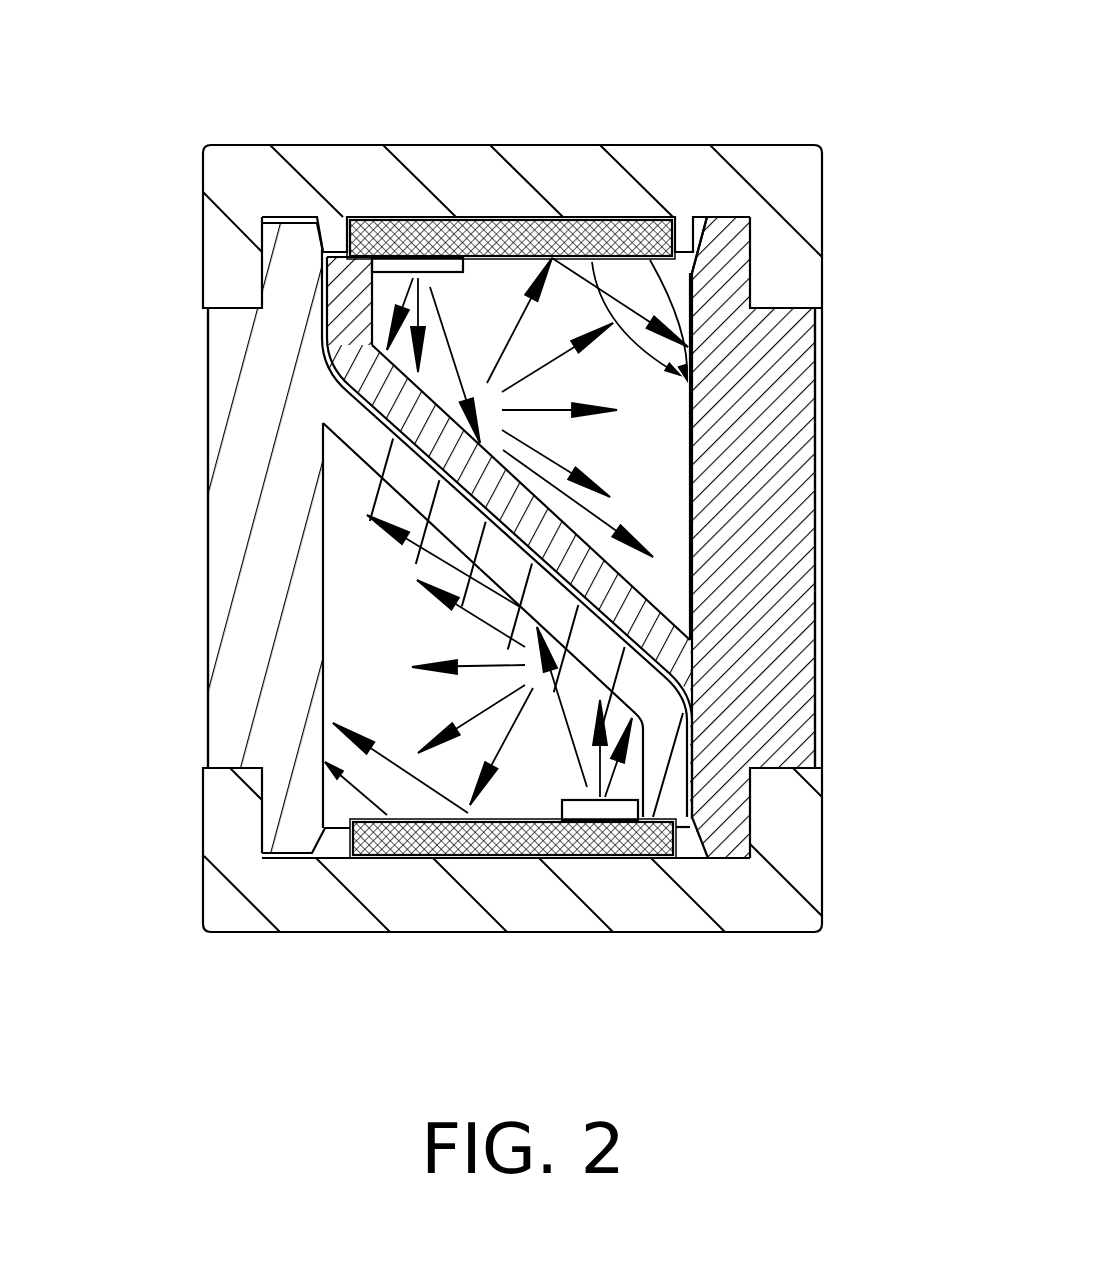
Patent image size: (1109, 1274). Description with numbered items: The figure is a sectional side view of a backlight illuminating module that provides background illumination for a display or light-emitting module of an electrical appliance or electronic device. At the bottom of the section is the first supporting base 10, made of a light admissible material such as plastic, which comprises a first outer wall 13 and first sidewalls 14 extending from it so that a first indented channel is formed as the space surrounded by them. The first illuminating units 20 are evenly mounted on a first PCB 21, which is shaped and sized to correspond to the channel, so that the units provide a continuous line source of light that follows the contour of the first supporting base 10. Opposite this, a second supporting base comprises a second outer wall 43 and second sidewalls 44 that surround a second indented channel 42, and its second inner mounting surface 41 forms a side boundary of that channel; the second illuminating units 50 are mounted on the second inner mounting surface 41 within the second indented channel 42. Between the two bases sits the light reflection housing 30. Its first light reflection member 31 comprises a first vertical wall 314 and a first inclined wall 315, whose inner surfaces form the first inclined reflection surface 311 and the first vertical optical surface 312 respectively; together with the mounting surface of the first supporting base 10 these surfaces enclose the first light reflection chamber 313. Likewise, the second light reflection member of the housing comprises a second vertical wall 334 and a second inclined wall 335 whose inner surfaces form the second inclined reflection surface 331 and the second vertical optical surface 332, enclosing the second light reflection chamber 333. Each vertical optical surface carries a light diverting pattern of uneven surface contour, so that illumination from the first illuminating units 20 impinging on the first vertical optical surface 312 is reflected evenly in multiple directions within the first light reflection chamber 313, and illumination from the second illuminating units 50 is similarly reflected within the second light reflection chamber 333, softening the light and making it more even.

The first supporting base 10 is at (685, 968).
The first outer wall 13 is at (320, 905).
The first sidewalls 14 is at (215, 835).
The first illuminating units 20 is at (600, 805).
The first PCB 21 is at (530, 840).
The light reflection housing 30 is at (528, 537).
The first light reflection member 31 is at (520, 626).
The second inner mounting surface 41 is at (760, 395).
The second indented channel 42 is at (686, 252).
The second outer wall 43 is at (330, 165).
The second sidewalls 44 is at (235, 268).
The second illuminating units 50 is at (398, 262).
The first inclined reflection surface 311 is at (353, 453).
The first vertical optical surface 312 is at (415, 865).
The first light reflection chamber 313 is at (358, 672).
The first vertical wall 314 is at (227, 496).
The first inclined wall 315 is at (622, 678).
The second inclined reflection surface 331 is at (660, 603).
The second vertical optical surface 332 is at (598, 262).
The second light reflection chamber 333 is at (660, 450).
The second vertical wall 334 is at (760, 505).
The second inclined wall 335 is at (340, 399).